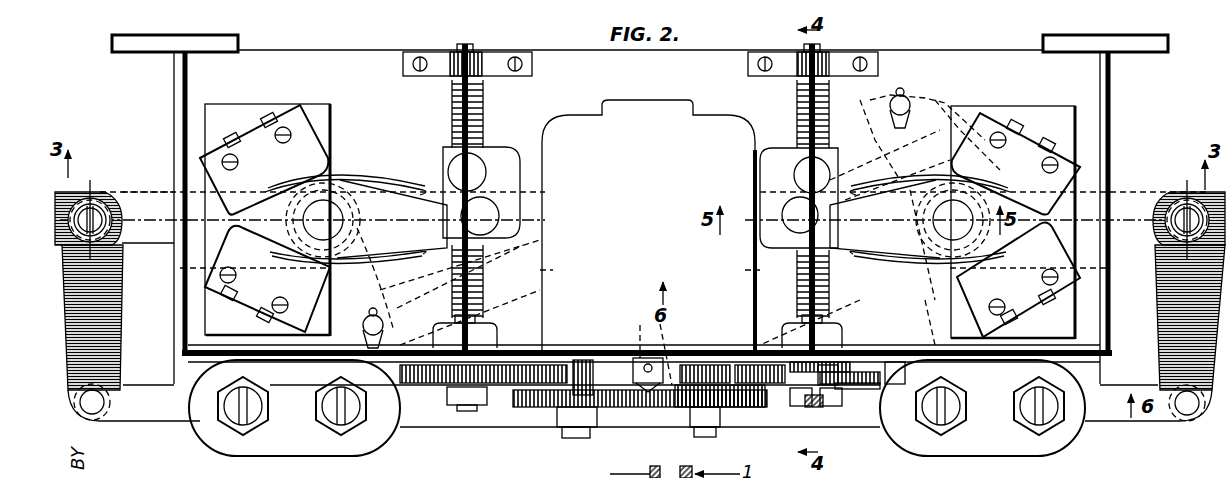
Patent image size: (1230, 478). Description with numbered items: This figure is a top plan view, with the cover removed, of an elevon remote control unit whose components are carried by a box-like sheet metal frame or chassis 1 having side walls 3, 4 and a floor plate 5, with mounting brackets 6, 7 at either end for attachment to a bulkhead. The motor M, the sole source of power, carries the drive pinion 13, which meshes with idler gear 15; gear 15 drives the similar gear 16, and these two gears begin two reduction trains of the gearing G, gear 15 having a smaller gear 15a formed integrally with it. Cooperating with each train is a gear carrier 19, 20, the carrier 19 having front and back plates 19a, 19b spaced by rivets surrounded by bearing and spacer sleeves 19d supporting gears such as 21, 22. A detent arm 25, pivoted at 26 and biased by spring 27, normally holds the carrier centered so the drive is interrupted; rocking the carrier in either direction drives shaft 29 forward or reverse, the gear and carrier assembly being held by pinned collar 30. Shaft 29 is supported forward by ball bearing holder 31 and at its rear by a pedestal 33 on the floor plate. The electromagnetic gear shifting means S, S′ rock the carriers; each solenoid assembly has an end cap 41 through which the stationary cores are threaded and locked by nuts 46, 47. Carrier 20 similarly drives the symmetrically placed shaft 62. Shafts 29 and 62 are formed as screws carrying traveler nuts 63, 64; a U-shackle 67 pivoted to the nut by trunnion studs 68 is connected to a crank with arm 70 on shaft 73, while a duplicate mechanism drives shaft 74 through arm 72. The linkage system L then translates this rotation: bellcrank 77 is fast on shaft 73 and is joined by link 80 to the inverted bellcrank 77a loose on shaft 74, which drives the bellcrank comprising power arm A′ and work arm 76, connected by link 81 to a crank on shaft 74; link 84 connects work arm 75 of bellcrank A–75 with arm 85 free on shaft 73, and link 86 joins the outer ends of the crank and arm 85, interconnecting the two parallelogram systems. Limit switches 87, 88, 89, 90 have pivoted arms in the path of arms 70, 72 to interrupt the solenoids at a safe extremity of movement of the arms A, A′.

The frame or chassis 1 is at (172, 88).
The side wall 3 is at (182, 114).
The side wall 4 is at (1111, 84).
The floor plate 5 is at (300, 60).
The mounting bracket 6 is at (125, 41).
The mounting bracket 7 is at (1162, 44).
The drive pinion 13 is at (645, 405).
The idler gear 15 is at (688, 408).
The smaller gear 15a is at (685, 366).
The gear 16 is at (542, 408).
The gear carrier 19 is at (866, 395).
The front plate 19a is at (855, 392).
The back plate 19b is at (866, 368).
The bearing and spacer sleeve 19d is at (796, 404).
The gear carrier 20 is at (408, 392).
The gear 21 is at (726, 368).
The gear 22 is at (752, 368).
The detent arm 25 is at (846, 366).
The pivot 26 is at (894, 368).
The spring 27 is at (810, 406).
The shaft 29 is at (799, 92).
The pinned collar 30 is at (830, 406).
The ball bearing holder 31 is at (838, 322).
The pedestal 33 is at (826, 52).
The end cap 41 is at (990, 446).
The nut 46 is at (924, 430).
The nut 47 is at (1042, 432).
The shaft 62 is at (455, 96).
The traveler nut 63 is at (797, 142).
The traveler nut 64 is at (446, 150).
The U-shackle 67 is at (795, 160).
The trunnion stud 68 is at (800, 172).
The crank arm 70 is at (887, 232).
The arm 72 is at (382, 200).
The shaft 73 is at (945, 232).
The shaft 74 is at (325, 218).
The work arm 75 is at (1170, 230).
The work arm 76 is at (108, 230).
The bellcrank lever 77 is at (915, 110).
The bellcrank lever 77a is at (140, 205).
The link 80 is at (878, 98).
The link 81 is at (143, 410).
The link 84 is at (1120, 421).
The arm 85 is at (922, 267).
The link 86 is at (462, 408).
The limit switch 87 is at (968, 294).
The limit switch 88 is at (980, 120).
The limit switch 89 is at (306, 287).
The limit switch 90 is at (312, 156).
The power arm A is at (1193, 208).
The power arm A' is at (83, 208).
The gearing G is at (514, 410).
The linkage system L is at (938, 105).
The motor M is at (626, 128).
The electromagnetic gear shifting means S is at (984, 411).
The electromagnetic gear shifting means S' is at (285, 408).